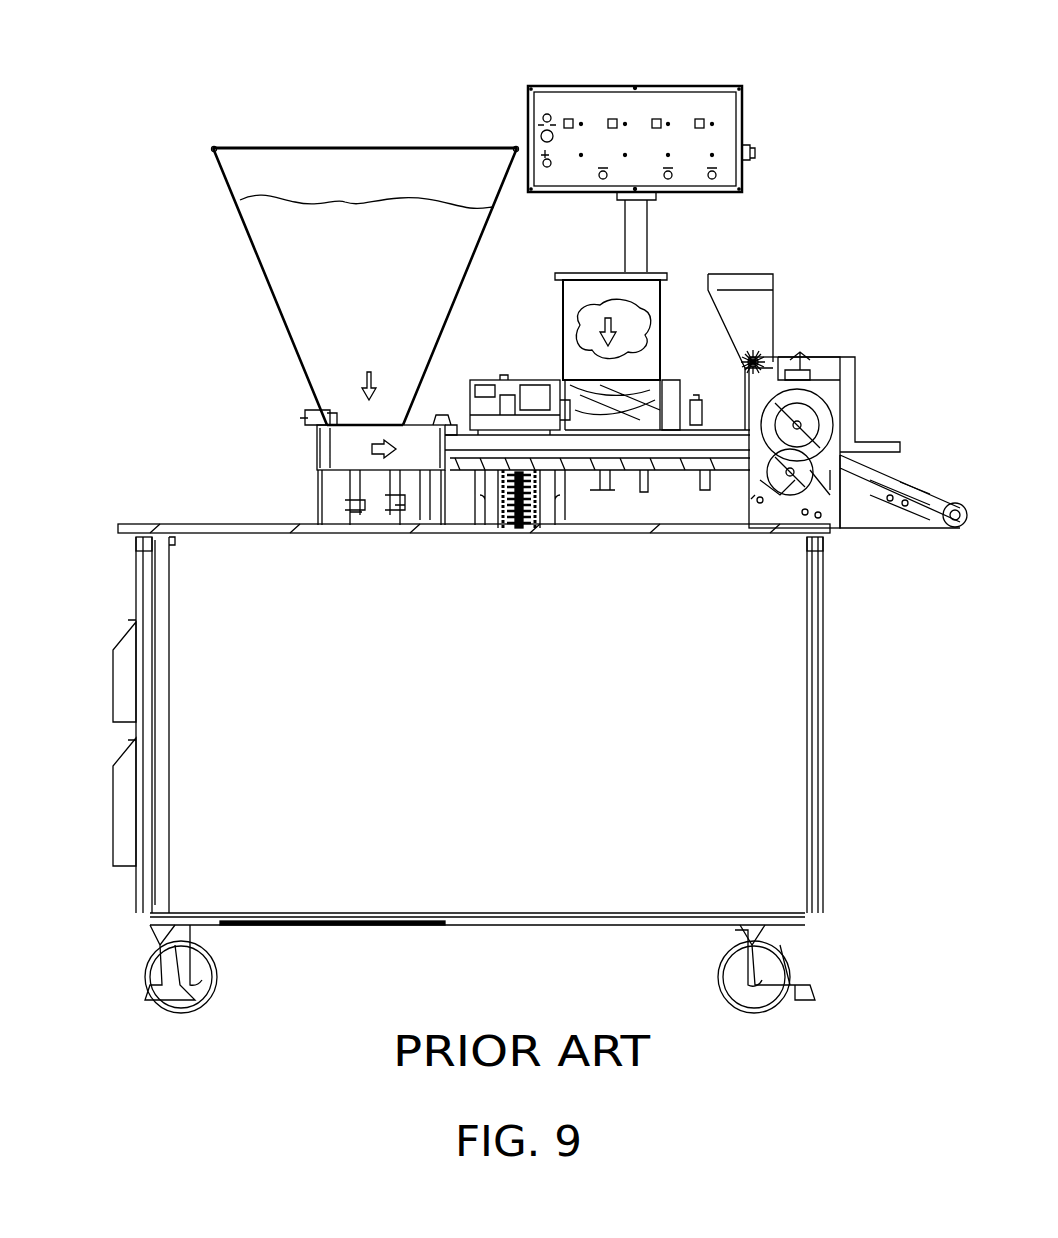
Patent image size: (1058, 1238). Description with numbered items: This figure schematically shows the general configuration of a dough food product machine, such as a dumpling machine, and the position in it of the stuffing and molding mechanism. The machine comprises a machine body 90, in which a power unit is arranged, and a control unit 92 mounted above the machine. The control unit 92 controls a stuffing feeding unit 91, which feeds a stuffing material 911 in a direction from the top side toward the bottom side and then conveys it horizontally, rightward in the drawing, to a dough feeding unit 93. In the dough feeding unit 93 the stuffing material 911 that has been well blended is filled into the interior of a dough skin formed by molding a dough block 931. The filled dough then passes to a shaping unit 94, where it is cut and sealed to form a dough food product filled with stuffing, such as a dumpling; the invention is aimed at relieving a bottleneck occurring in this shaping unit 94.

The machine body 90 is at (148, 518).
The stuffing feeding unit 91 is at (276, 388).
The stuffing material 911 is at (278, 263).
The control unit 92 is at (722, 84).
The dough feeding unit 93 is at (664, 379).
The dough block 931 is at (578, 330).
The shaping unit 94 is at (855, 348).